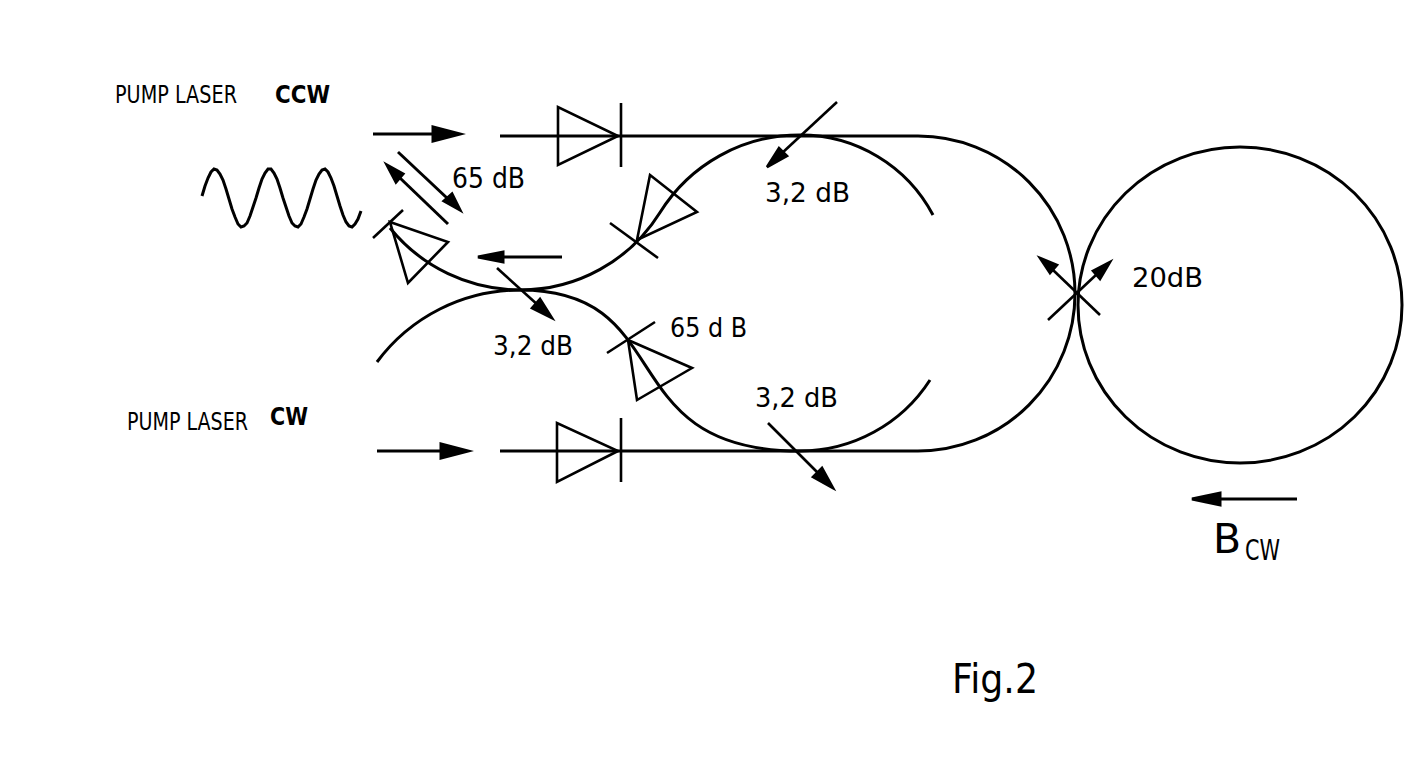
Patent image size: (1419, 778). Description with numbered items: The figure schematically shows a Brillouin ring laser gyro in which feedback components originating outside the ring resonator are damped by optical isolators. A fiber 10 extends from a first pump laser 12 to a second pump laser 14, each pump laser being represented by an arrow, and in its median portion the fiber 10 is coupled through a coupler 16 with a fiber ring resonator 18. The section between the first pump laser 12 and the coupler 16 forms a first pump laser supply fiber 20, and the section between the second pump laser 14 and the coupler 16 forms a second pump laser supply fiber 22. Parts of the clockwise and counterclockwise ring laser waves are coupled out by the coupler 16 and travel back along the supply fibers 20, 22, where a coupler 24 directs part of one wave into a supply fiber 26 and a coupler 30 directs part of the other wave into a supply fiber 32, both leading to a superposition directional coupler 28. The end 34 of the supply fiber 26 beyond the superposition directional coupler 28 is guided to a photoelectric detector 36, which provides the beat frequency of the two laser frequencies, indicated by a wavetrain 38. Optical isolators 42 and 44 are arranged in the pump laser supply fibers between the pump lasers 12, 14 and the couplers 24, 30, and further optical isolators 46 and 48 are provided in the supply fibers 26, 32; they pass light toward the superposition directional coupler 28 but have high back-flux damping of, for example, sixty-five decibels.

The fiber 10 is at (1020, 127).
The first pump laser 12 is at (400, 134).
The second pump laser 14 is at (415, 451).
The coupler 16 is at (1078, 296).
The fiber ring resonator 18 is at (1330, 173).
The first pump laser supply fiber 20 is at (713, 135).
The second pump laser supply fiber 22 is at (718, 455).
The coupler 24 is at (795, 135).
The supply fiber 26 is at (723, 155).
The superposition directional coupler 28 is at (523, 288).
The coupler 30 is at (797, 457).
The supply fiber 32 is at (707, 427).
The end of the directional coupler supply fiber 34 is at (455, 279).
The photoelectric detector 36 is at (397, 257).
The wavetrain 38 is at (287, 218).
The optical isolator 42 is at (587, 130).
The optical isolator 44 is at (583, 455).
The optical isolator 46 is at (667, 217).
The optical isolator 48 is at (652, 390).